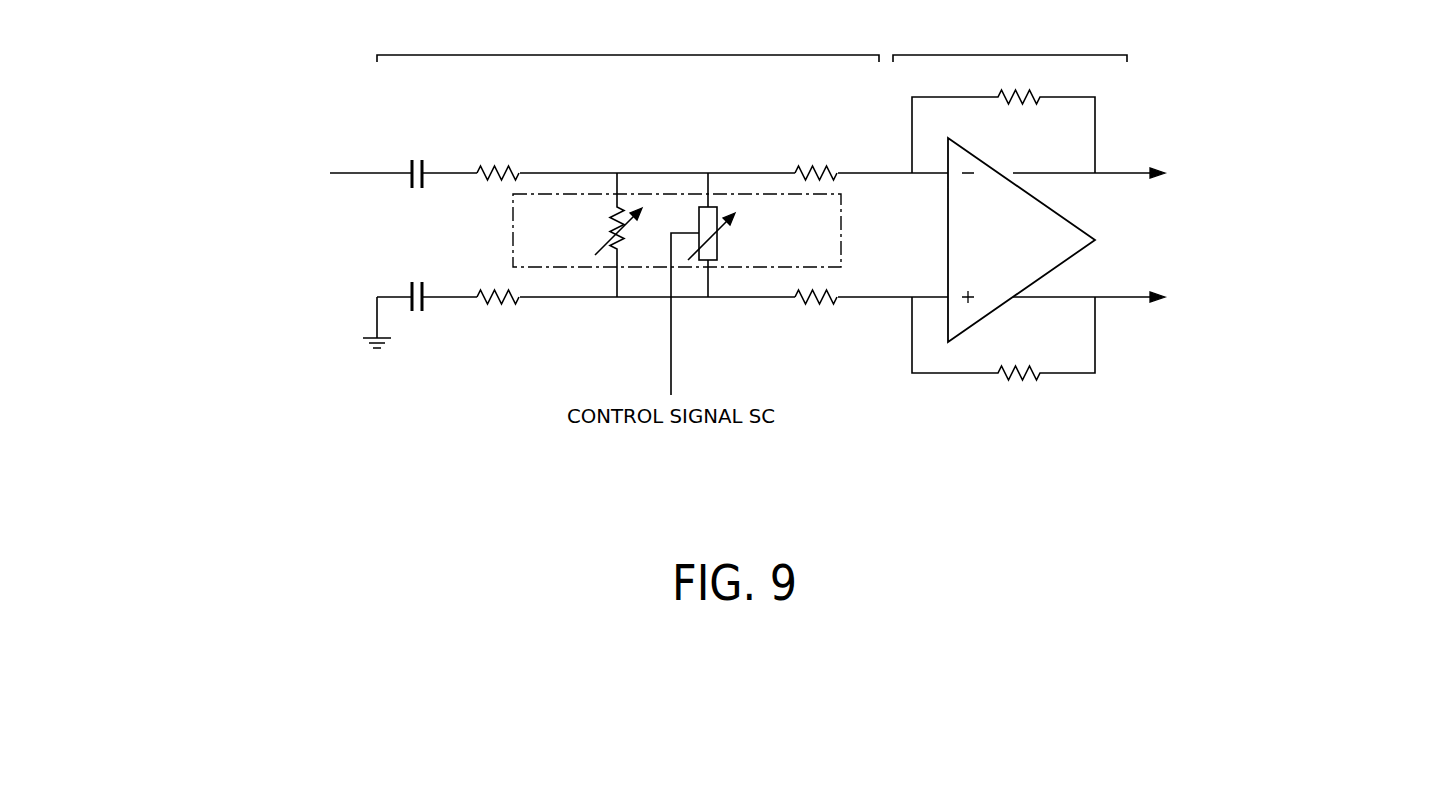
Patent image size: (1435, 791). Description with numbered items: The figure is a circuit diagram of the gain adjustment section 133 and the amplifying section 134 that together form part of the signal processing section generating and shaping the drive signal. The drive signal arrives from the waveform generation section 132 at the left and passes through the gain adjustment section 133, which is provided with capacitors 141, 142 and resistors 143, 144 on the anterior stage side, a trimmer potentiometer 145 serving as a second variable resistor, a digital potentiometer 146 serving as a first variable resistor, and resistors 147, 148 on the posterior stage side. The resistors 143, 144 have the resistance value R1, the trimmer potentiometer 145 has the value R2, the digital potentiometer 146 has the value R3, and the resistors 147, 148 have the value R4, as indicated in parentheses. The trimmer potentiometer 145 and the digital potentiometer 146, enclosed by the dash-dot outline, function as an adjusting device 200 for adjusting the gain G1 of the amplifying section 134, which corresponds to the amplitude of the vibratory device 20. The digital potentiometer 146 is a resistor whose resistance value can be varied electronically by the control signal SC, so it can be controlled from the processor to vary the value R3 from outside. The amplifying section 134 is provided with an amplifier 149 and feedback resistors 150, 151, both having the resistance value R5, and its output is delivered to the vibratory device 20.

The gain adjustment section 133 is at (628, 42).
The amplifying section 134 is at (1010, 42).
The waveform generation section 132 is at (229, 173).
The capacitor 141 is at (427, 162).
The capacitor 142 is at (425, 284).
The resistor 143 is at (516, 165).
The resistor 144 is at (482, 306).
The trimmer potentiometer 145 is at (580, 235).
The digital potentiometer 146 is at (722, 240).
The resistor 147 is at (827, 165).
The resistor 148 is at (803, 306).
The amplifier 149 is at (1068, 216).
The feedback resistor 150 is at (1042, 93).
The feedback resistor 151 is at (1003, 378).
The adjusting device 200 is at (843, 222).
The vibratory device 20 is at (1216, 235).